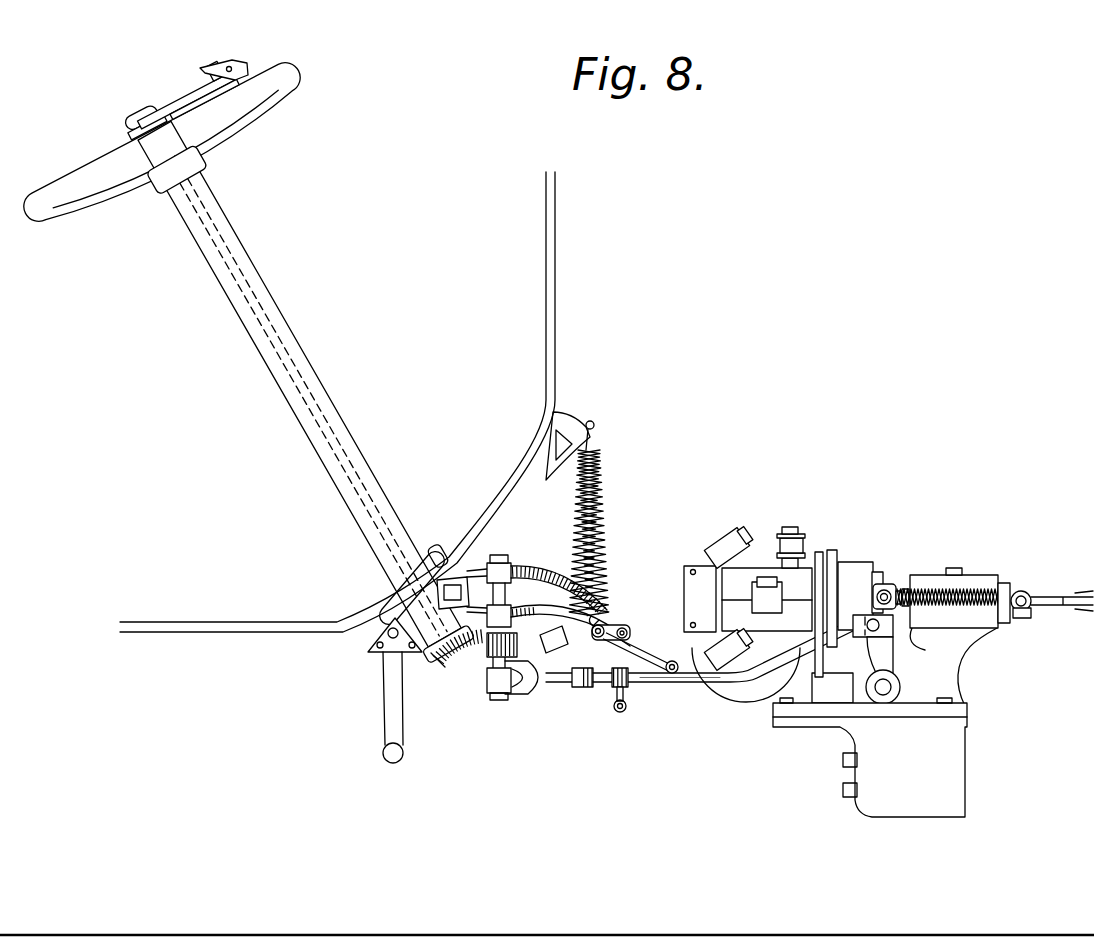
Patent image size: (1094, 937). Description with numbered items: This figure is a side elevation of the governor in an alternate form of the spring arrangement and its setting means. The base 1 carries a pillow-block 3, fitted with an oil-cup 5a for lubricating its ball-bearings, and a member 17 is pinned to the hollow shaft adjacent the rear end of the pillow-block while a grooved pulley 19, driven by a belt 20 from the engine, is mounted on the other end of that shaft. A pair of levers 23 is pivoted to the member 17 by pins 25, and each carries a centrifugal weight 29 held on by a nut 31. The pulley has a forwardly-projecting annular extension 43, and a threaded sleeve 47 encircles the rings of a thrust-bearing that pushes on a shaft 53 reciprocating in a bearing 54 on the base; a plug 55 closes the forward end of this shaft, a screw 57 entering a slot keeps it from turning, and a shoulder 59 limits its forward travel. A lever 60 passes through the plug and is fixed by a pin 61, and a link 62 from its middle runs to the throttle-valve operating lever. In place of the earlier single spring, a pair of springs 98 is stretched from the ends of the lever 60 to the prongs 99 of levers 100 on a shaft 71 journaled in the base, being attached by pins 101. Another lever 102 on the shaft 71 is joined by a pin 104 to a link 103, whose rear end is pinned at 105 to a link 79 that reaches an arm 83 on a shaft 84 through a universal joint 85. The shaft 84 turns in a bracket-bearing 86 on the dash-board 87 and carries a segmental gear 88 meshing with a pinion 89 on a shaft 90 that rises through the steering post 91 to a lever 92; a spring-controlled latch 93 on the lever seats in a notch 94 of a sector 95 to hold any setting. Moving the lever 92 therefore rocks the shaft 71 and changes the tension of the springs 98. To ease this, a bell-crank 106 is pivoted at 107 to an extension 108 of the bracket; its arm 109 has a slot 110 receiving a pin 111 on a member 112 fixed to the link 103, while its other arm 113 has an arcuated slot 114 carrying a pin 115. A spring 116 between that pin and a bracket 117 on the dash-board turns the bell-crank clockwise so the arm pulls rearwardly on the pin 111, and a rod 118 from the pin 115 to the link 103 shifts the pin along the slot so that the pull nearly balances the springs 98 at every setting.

The base 1 is at (835, 712).
The pillow-block 3 is at (767, 599).
The oil-cup 5a is at (788, 533).
The member 17 is at (700, 599).
The pulley 19 is at (818, 552).
The belt 20 is at (820, 665).
The levers 23 is at (698, 560).
The pins 25 is at (692, 571).
The centrifugal weight 29 is at (718, 545).
The nut 31 is at (719, 542).
The forwardly-projecting annular extension 43 is at (831, 553).
The sleeve 47 is at (852, 565).
The shaft 53 is at (900, 594).
The bearing 54 is at (978, 575).
The plug 55 is at (1004, 630).
The bolt or screw 57 is at (955, 570).
The shoulder 59 is at (885, 590).
The lever 60 is at (1024, 614).
The pin 61 is at (1019, 590).
The link 62 is at (1080, 596).
The shaft 71 is at (884, 692).
The link 79 is at (553, 684).
The arm 83 is at (490, 680).
The shaft 84 is at (405, 592).
The universal joint 85 is at (538, 690).
The bracket-bearing 86 is at (458, 573).
The dash-board 87 is at (546, 305).
The segmental gear 88 is at (482, 650).
The pinion 89 is at (478, 660).
The shaft 90 is at (250, 313).
The steering post 91 is at (334, 410).
The lever 92 is at (184, 100).
The spring-controlled latch 93 is at (222, 62).
The notch 94 is at (236, 93).
The sector 95 is at (163, 108).
The springs 98 is at (922, 594).
The prongs 99 is at (876, 580).
The levers 100 is at (900, 632).
The pins 101 is at (890, 590).
The lever 102 is at (888, 652).
The link 103 is at (652, 675).
The pin 104 is at (896, 625).
The pin 105 is at (586, 690).
The bell-crank 106 is at (614, 664).
The pivot 107 is at (615, 626).
The extension 108 is at (556, 567).
The arm 109 is at (621, 713).
The slot 110 is at (625, 709).
The pin 111 is at (616, 708).
The member 112 is at (633, 684).
The arm 113 is at (558, 632).
The slot 114 is at (574, 686).
The pin 115 is at (604, 628).
The spring 116 is at (600, 477).
The bracket 117 is at (578, 428).
The rod 118 is at (640, 643).